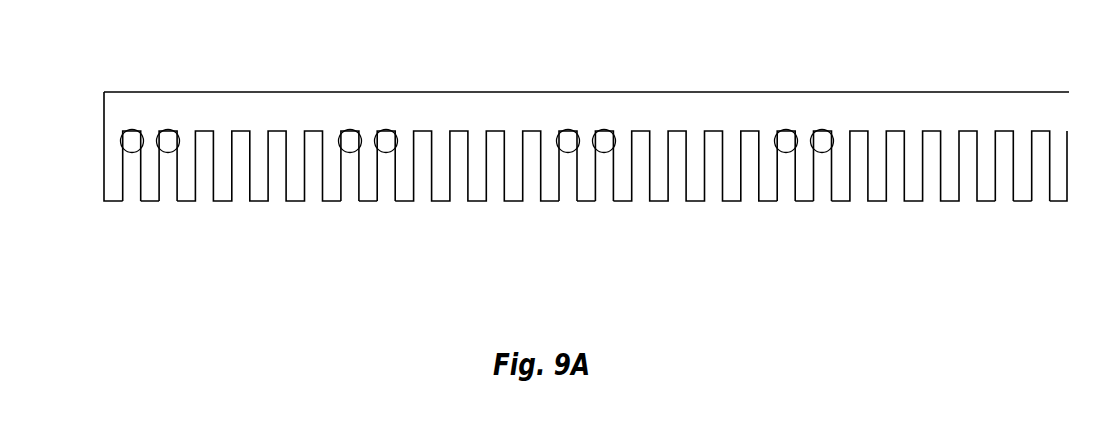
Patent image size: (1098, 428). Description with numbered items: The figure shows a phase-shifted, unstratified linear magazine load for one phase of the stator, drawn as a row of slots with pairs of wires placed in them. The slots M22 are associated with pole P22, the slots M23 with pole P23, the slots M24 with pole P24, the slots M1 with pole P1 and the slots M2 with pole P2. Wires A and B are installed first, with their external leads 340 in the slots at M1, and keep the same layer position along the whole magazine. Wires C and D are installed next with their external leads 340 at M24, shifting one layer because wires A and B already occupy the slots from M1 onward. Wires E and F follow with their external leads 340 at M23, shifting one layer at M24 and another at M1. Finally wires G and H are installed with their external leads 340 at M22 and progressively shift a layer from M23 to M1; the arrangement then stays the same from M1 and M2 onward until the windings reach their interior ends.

The external leads 340 is at (822, 129).
The slots associated with pole P22 M22 is at (133, 208).
The slots associated with pole P23 M23 is at (351, 208).
The slots associated with pole P24 M24 is at (570, 208).
The slots associated with pole P1 M1 is at (786, 208).
The slots associated with pole P2 M2 is at (1005, 208).